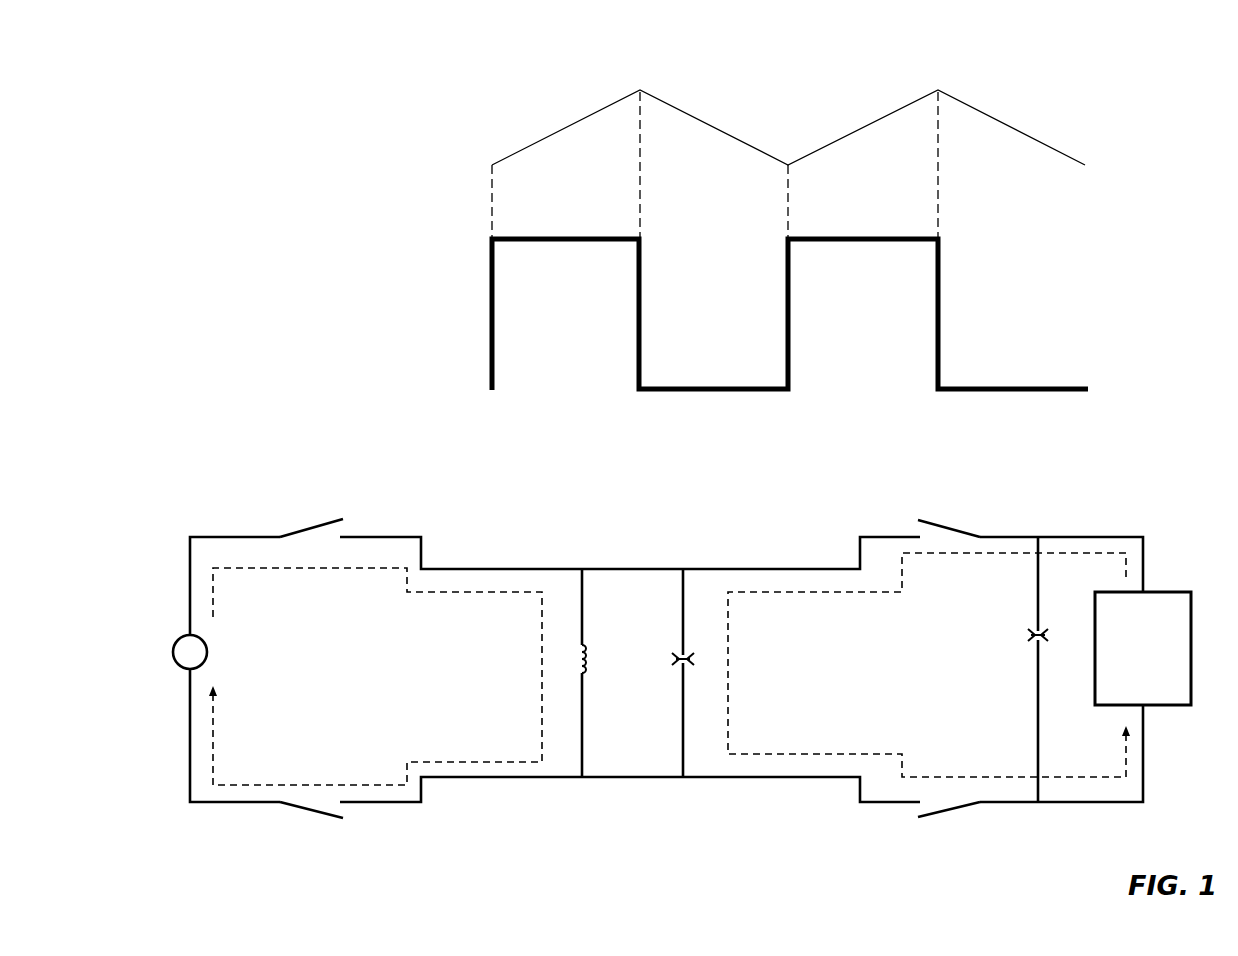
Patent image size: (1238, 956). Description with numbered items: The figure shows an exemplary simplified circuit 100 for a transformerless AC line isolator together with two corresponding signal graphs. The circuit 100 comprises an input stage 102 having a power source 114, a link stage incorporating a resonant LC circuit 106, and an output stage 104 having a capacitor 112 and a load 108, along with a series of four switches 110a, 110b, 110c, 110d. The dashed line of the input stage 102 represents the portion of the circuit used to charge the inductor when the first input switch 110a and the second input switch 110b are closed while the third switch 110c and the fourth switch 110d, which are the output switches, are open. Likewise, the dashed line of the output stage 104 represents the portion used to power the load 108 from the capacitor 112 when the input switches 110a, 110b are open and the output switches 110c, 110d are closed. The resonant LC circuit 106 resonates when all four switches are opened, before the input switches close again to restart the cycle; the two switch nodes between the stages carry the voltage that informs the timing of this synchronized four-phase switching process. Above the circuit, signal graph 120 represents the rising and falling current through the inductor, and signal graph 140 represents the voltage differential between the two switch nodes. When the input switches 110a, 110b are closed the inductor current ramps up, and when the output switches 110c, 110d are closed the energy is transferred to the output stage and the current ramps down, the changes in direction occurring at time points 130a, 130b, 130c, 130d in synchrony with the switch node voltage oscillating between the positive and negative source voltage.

The circuit 100 is at (139, 554).
The input stage 102 is at (429, 729).
The output stage 104 is at (889, 734).
The resonant LC circuit 106 is at (651, 644).
The load 108 is at (1161, 579).
The input switch 1 (SW1) 110a is at (324, 474).
The input switch 2 (SW2) 110b is at (324, 859).
The output switch 3 (SW3) 110c is at (931, 479).
The output switch 4 (SW4) 110d is at (926, 856).
The capacitor 112 is at (1030, 653).
The power source 114 is at (217, 652).
The signal graph 120 is at (317, 91).
The time point 130a is at (487, 209).
The time point 130b is at (635, 209).
The time point 130c is at (784, 209).
The time point 130d is at (934, 209).
The signal graph 140 is at (271, 297).